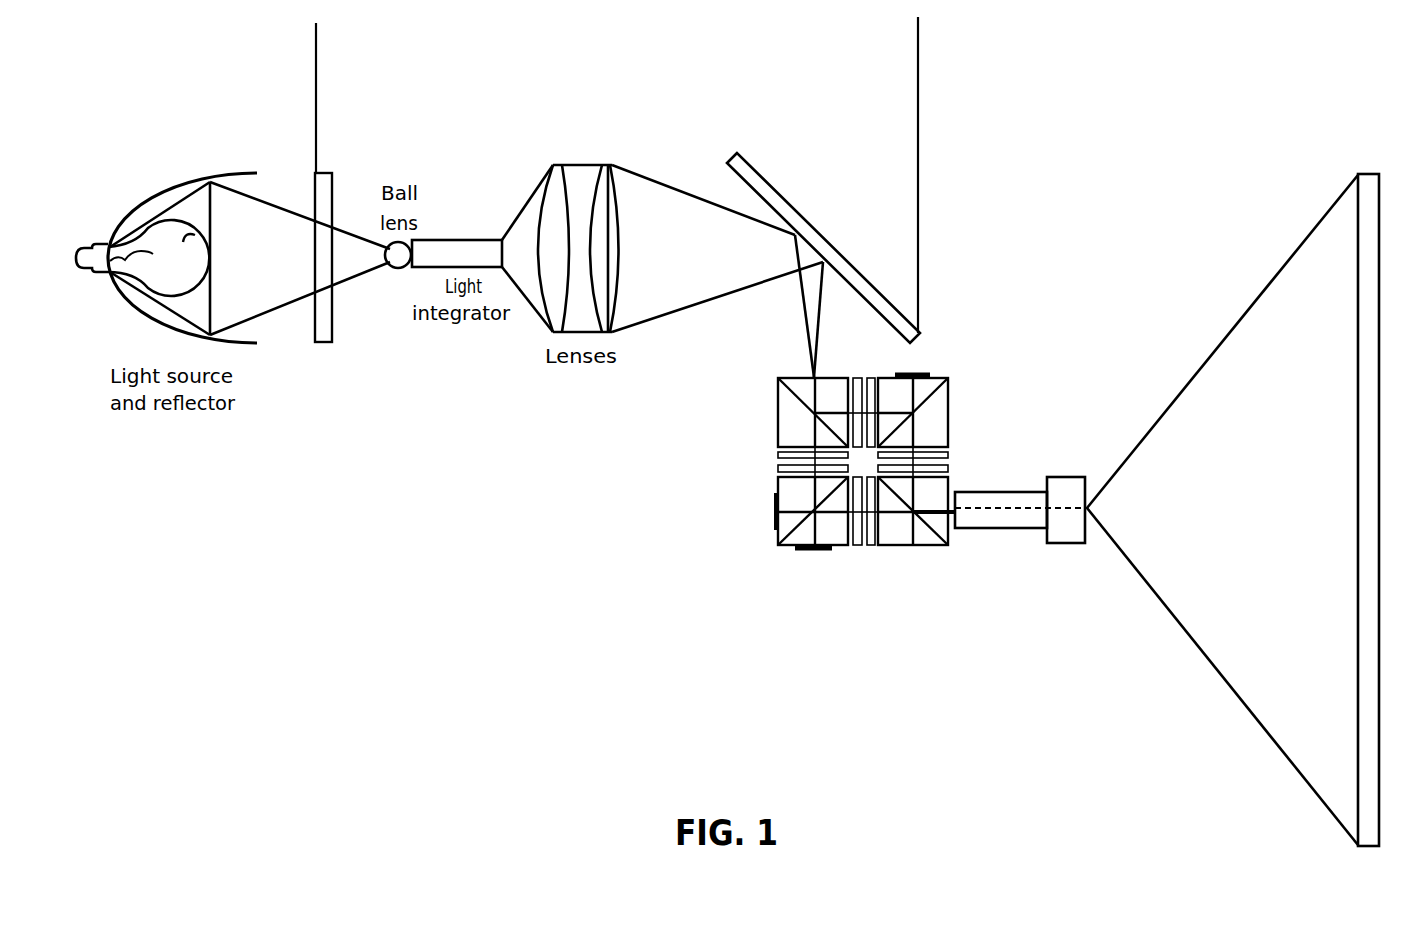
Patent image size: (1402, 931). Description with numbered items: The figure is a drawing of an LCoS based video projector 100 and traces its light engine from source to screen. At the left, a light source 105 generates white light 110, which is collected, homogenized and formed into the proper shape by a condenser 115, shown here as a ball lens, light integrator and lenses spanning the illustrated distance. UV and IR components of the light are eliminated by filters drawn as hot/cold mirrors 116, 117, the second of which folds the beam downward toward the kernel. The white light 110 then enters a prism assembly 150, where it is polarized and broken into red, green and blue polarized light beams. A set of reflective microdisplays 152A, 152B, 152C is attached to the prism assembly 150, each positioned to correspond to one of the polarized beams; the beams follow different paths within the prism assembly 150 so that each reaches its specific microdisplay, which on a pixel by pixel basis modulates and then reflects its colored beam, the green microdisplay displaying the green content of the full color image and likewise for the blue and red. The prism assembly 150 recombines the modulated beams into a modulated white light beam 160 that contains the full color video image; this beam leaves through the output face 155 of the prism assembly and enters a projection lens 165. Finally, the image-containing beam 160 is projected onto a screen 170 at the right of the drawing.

The LCoS based video projector 100 is at (468, 553).
The light source 105 is at (197, 280).
The white light 110 is at (280, 293).
The condenser 115 is at (912, 63).
The hot/cold mirror (filter) 116 is at (327, 342).
The hot/cold mirror (filter) 117 is at (817, 230).
The prism assembly 150 is at (903, 566).
The reflective microdisplay 152A is at (923, 372).
The reflective microdisplay 152B is at (775, 512).
The reflective microdisplay 152C is at (812, 550).
The prism output face 155 is at (960, 477).
The modulated white light beam 160 is at (1006, 506).
The projection lens 165 is at (1078, 460).
The screen 170 is at (1362, 172).